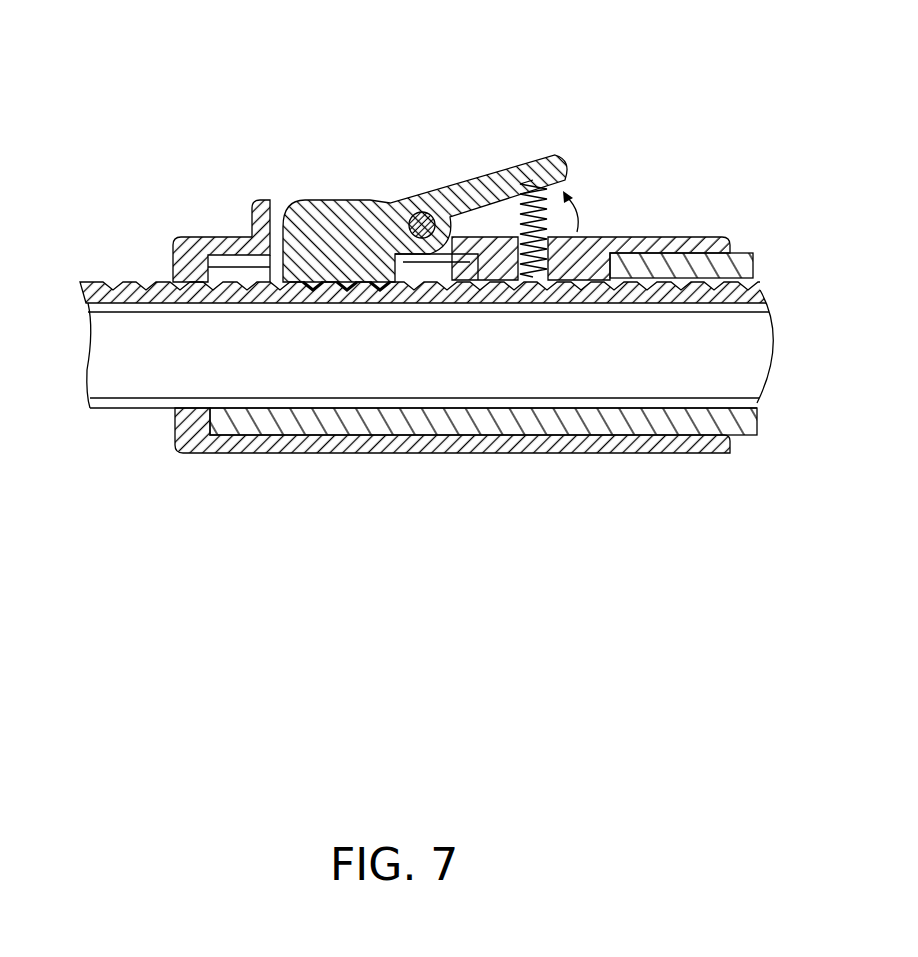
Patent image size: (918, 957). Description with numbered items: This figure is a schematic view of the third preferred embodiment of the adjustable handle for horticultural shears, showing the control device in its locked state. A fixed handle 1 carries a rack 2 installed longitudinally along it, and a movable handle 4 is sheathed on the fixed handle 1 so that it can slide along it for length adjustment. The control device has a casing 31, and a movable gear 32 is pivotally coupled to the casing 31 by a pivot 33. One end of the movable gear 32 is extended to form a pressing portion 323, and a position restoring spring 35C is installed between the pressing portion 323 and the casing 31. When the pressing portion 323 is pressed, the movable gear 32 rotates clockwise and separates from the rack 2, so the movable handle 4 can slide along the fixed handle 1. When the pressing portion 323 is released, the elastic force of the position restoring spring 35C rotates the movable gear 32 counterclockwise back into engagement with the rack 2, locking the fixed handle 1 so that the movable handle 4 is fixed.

The fixed handle 1 is at (414, 349).
The rack 2 is at (414, 254).
The casing 31 is at (384, 337).
The movable gear 32 is at (337, 190).
The pressing portion 323 is at (484, 125).
The pivot 33 is at (378, 150).
The position restoring spring 35C is at (604, 198).
The movable handle 4 is at (502, 335).